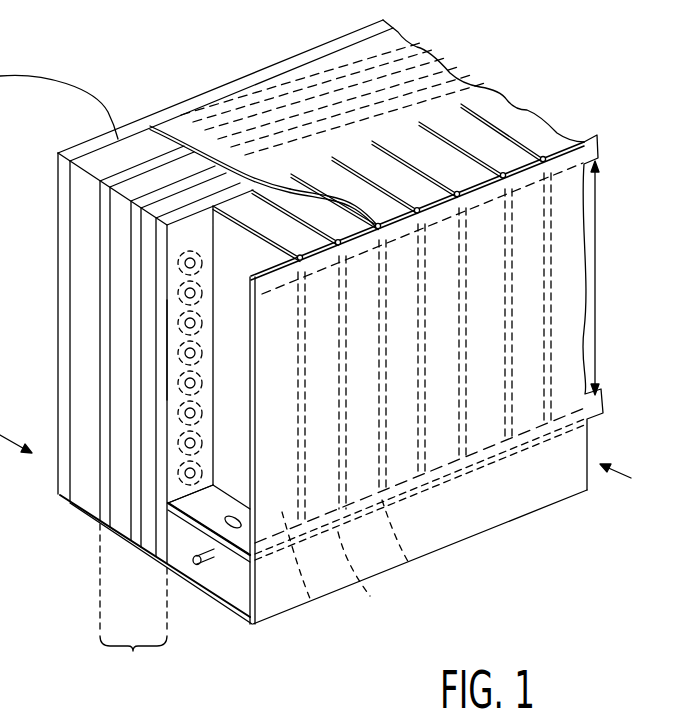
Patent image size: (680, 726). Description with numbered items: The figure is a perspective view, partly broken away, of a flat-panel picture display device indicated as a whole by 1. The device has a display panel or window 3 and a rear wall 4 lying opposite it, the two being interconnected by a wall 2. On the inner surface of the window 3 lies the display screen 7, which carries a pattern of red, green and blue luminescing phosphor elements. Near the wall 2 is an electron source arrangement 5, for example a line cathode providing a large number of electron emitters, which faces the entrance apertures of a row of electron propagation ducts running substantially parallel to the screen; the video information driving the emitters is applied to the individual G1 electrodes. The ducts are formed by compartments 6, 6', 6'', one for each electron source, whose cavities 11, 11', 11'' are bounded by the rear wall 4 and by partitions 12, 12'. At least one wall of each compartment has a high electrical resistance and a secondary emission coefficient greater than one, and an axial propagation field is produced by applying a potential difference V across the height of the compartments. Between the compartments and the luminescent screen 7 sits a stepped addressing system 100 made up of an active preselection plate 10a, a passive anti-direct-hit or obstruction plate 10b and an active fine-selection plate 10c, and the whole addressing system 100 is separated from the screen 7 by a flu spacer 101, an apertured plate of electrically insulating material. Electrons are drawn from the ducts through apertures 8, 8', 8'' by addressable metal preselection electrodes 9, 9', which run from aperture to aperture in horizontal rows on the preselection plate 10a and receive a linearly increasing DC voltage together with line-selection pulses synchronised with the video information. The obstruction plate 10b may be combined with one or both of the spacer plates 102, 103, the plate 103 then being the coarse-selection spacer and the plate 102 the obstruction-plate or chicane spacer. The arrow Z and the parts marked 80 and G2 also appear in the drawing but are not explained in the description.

The heat exchanger module 1 is at (644, 492).
The wall 2 is at (140, 543).
The display panel 3 is at (86, 146).
The rear wall 4 is at (530, 404).
The electron source arrangement 5 is at (213, 557).
The compartment 6 is at (309, 455).
The compartment 6' is at (364, 437).
The compartment 6'' is at (421, 380).
The display screen 7 is at (67, 197).
The aperture 8 is at (205, 292).
The aperture 8' is at (209, 341).
The aperture 8'' is at (211, 402).
The preselection electrode 9 is at (136, 376).
The preselection electrode 9' is at (94, 350).
The preselection plate 10a is at (468, 94).
The obstruction plate 10b is at (443, 78).
The fine-selection plate 10c is at (412, 55).
The cavity 11 is at (135, 519).
The cavity 11' is at (220, 126).
The cavity 11'' is at (314, 123).
The partition 12 is at (256, 234).
The partition 12' is at (397, 198).
The base plate 80 is at (157, 558).
The addressing system 100 is at (133, 600).
The flu spacer 101 is at (80, 248).
The spacer plate 102 is at (117, 469).
The spacer plate 103 is at (147, 481).
The G1 electrode G1 is at (238, 562).
The gasket G2 is at (250, 560).
The potential difference V is at (597, 273).
The direction axis Z is at (25, 452).